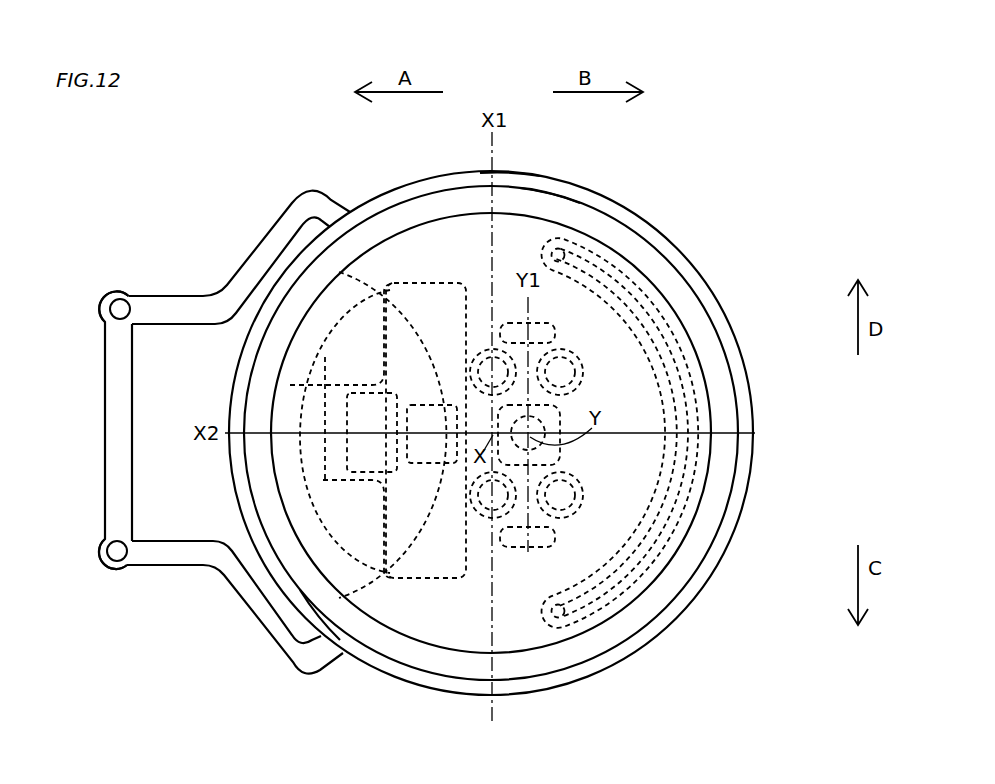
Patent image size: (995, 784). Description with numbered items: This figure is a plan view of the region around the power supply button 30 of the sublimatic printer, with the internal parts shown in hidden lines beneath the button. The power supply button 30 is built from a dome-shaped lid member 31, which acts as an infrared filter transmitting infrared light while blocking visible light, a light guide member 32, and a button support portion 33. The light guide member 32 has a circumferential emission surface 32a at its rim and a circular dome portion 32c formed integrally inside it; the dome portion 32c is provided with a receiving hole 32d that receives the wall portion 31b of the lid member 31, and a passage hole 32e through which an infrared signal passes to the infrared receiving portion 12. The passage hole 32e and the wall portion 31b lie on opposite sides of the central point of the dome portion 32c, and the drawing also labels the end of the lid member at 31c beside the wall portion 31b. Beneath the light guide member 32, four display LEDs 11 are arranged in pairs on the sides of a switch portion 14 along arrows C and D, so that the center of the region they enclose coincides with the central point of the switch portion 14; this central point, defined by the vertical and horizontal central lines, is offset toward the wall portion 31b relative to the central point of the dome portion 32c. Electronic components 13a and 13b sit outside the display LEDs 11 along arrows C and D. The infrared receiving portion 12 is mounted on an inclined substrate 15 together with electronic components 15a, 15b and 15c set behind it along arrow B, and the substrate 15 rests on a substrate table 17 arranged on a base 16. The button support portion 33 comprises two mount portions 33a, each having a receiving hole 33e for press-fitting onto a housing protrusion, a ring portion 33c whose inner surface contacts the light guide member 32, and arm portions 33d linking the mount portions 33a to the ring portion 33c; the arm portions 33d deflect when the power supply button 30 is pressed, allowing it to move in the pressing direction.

The display LEDs 11 is at (503, 352).
The infrared receiving portion 12 is at (372, 386).
The electronic component 13a is at (560, 533).
The electronic component 13b is at (545, 323).
The switch portion 14 is at (548, 415).
The substrate 15 is at (407, 385).
The electronic component 15a is at (393, 440).
The electronic component 15b is at (373, 480).
The electronic component 15c is at (430, 497).
The base 16 is at (385, 290).
The substrate table 17 is at (383, 323).
The power supply button 30 is at (748, 149).
The lid member 31 is at (413, 267).
The wall portion 31b is at (700, 560).
The cover rib end 31c is at (572, 250).
The light guide member 32 is at (470, 670).
The circumferential emission surface 32a is at (553, 205).
The dome portion 32c is at (318, 620).
The receiving hole 32d is at (620, 588).
The passage hole 32e is at (393, 283).
The button support portion 33 is at (400, 672).
The mount portions 33a is at (110, 294).
The ring portion 33c is at (515, 177).
The arm portions 33d is at (165, 317).
The receiving holes 33e is at (108, 312).